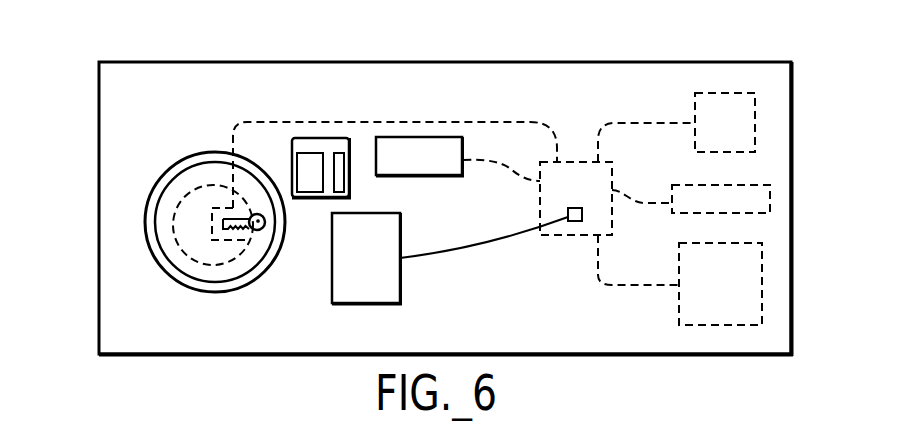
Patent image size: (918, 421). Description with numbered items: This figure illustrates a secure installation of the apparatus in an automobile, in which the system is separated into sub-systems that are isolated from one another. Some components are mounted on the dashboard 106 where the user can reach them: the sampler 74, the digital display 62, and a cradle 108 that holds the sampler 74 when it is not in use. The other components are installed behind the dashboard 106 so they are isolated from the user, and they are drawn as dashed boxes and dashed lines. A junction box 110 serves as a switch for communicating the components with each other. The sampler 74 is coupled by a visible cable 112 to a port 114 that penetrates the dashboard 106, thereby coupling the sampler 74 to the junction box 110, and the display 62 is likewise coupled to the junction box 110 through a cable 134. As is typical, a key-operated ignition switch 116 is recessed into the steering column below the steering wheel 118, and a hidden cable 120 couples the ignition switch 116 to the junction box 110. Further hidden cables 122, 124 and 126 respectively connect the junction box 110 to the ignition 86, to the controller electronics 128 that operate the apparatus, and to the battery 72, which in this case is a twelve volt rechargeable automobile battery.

The dashboard 106 is at (165, 98).
The steering wheel 118 is at (183, 161).
The ignition switch 116 is at (212, 240).
The cradle 108 is at (317, 138).
The hidden cable 120 is at (450, 121).
The display 62 is at (429, 166).
The signal line 134 is at (510, 172).
The junction box 110 is at (589, 196).
The sampler 74 is at (375, 276).
The visible cable 112 is at (488, 247).
The port 114 is at (573, 222).
The hidden cable 122 is at (650, 123).
The ignition 86 is at (741, 136).
The controller electronics 128 is at (690, 185).
The hidden cable 124 is at (635, 198).
The hidden cable 126 is at (648, 287).
The rechargeable automobile battery 72 is at (736, 304).